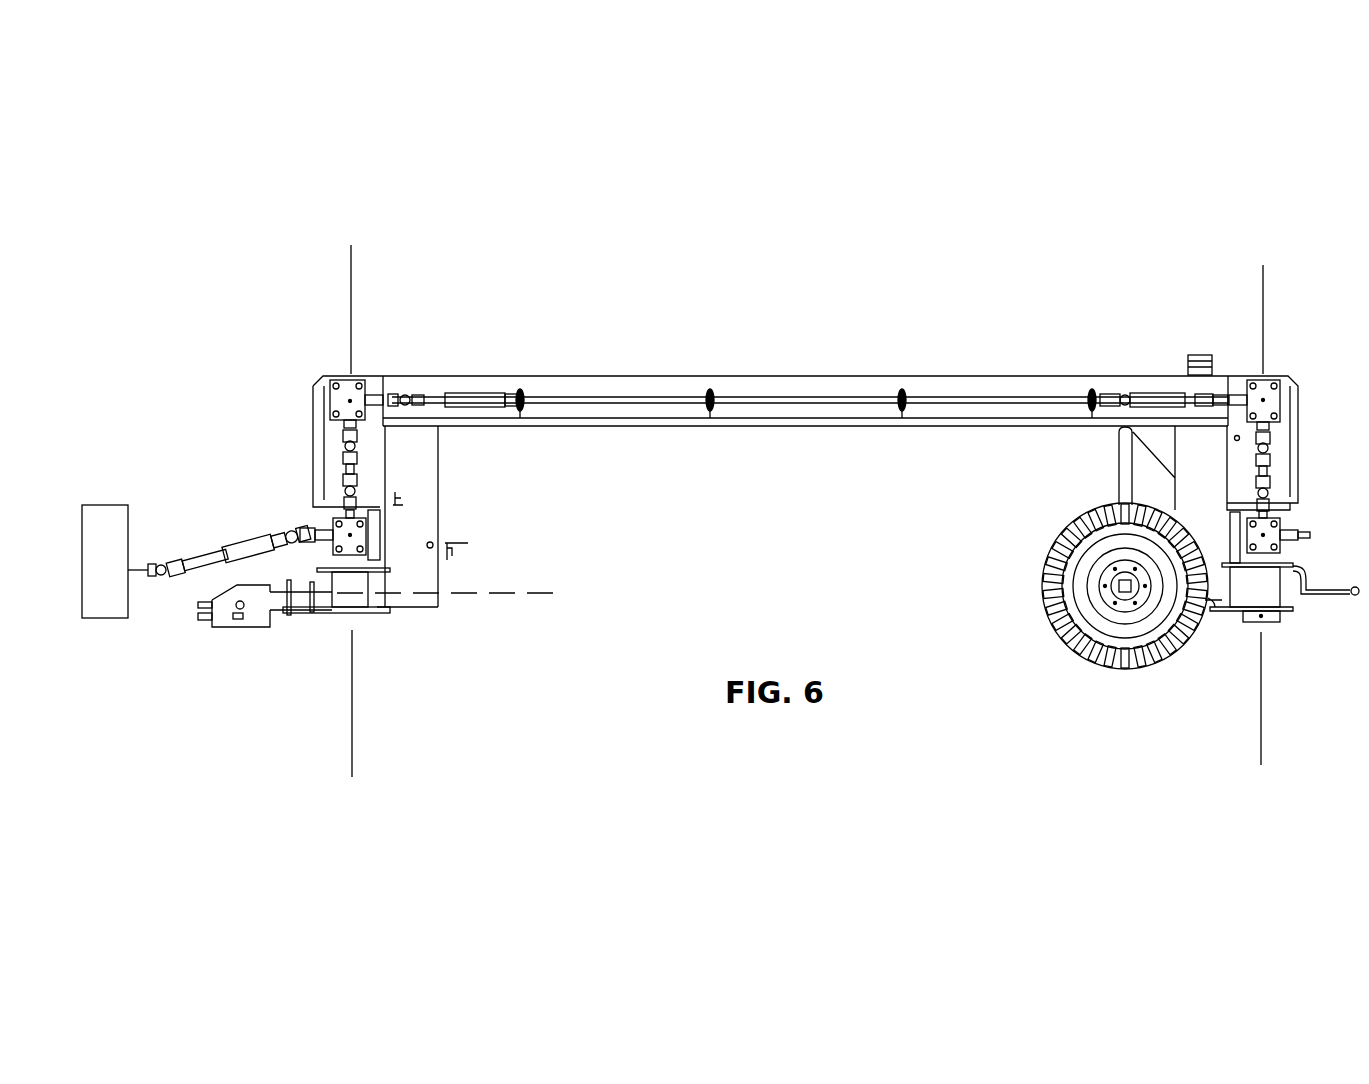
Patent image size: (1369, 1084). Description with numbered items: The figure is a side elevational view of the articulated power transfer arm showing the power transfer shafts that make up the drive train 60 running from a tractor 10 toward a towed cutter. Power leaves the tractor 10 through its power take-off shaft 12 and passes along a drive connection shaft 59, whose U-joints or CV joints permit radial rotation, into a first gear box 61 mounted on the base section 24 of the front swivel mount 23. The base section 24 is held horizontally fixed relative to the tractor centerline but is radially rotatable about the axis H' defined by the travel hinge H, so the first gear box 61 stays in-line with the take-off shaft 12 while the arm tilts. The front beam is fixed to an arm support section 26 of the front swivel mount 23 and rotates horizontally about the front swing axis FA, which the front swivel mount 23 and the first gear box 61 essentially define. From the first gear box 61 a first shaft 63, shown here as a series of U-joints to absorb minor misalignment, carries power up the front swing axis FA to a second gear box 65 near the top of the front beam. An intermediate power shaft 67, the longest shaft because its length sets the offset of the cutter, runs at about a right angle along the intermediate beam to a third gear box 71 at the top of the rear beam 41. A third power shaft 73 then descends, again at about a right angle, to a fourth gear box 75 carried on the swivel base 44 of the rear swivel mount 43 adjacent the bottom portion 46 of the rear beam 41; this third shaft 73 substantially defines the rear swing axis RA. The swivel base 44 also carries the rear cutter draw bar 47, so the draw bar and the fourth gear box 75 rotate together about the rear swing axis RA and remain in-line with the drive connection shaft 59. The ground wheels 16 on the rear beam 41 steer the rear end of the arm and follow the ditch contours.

The tractor 10 is at (112, 558).
The power take-off shaft 12 is at (138, 565).
The drive connection shaft 59 is at (197, 553).
The drive train 60 is at (282, 508).
The first gear box 61 is at (350, 535).
The first shaft 63 is at (353, 467).
The second gear box 65 is at (348, 401).
The intermediate power shaft 67 is at (760, 395).
The third gear box 71 is at (1270, 400).
The third power shaft 73 is at (1265, 477).
The fourth gear box 75 is at (1263, 537).
The swivel base 44 is at (1273, 560).
The rear cutter draw bar 47 is at (1340, 600).
The rear swivel mount 43 is at (1238, 618).
The bottom portion 46 is at (1197, 650).
The ground wheels 16 is at (1108, 668).
The rear beam 41 is at (1200, 487).
The arm support section 26 is at (388, 605).
The front swivel mount 23 is at (353, 602).
The base section 24 is at (307, 613).
The travel hinge H is at (244, 645).
The axis of rotation H' is at (453, 574).
The front swing axis FA is at (353, 290).
The rear swing axis RA is at (1263, 287).